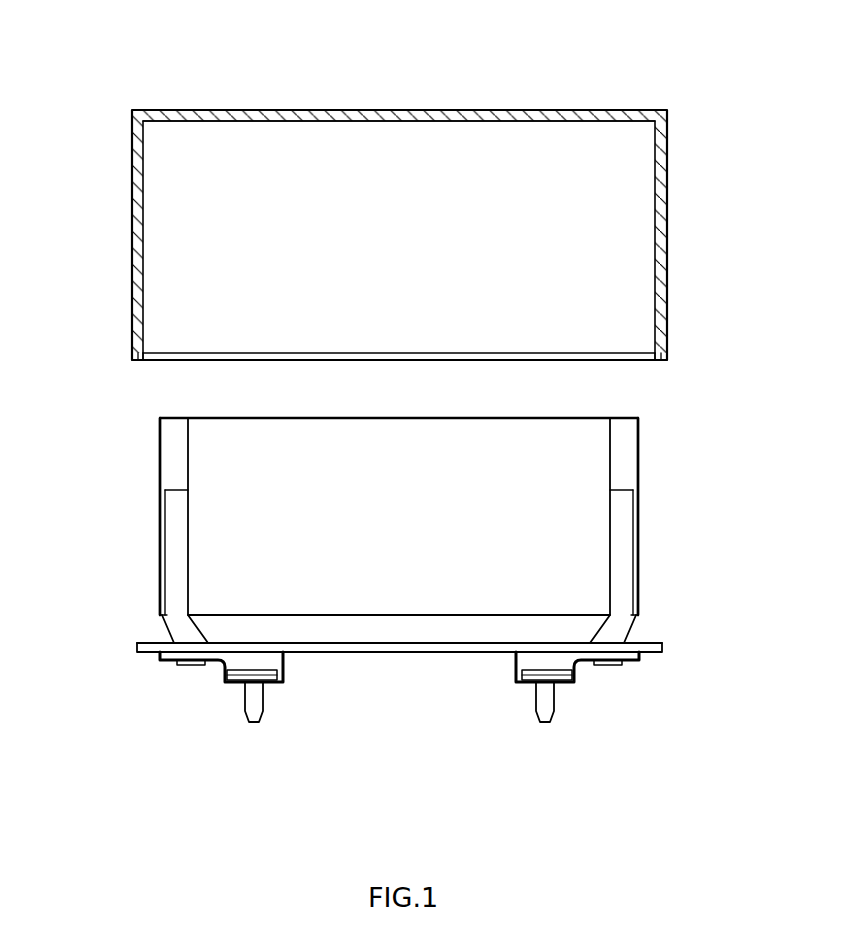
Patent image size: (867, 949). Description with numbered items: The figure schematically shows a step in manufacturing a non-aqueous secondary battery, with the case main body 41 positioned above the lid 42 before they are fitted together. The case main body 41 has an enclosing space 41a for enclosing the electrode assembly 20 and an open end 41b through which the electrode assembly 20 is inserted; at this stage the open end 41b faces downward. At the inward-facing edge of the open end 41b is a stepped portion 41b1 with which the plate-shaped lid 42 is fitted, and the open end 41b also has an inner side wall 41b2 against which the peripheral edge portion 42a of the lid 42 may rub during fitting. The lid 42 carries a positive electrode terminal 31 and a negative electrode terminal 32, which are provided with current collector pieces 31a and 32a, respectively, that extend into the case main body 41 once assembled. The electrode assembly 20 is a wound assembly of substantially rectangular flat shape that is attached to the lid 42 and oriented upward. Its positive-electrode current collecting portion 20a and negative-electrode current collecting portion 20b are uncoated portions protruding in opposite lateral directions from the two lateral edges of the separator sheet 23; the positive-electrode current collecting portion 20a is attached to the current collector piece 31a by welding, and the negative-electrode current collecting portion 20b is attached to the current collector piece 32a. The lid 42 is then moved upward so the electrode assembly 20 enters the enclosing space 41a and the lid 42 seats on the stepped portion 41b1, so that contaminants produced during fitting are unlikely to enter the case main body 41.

The electrode assembly 20 is at (363, 583).
The positive-electrode current collecting portion 20a is at (177, 467).
The negative-electrode current collecting portion 20b is at (623, 468).
The separator sheet 23 is at (432, 465).
The positive electrode terminal 31 is at (219, 692).
The current collector piece 31a is at (177, 548).
The negative electrode terminal 32 is at (581, 693).
The current collector piece 32a is at (623, 553).
The case main body 41 is at (566, 84).
The enclosing space 41a is at (303, 157).
The open end 41b is at (644, 363).
The stepped portion 41b1 is at (652, 362).
The inner side wall 41b2 is at (142, 360).
The lid 42 is at (397, 653).
The peripheral edge portion 42a is at (465, 647).